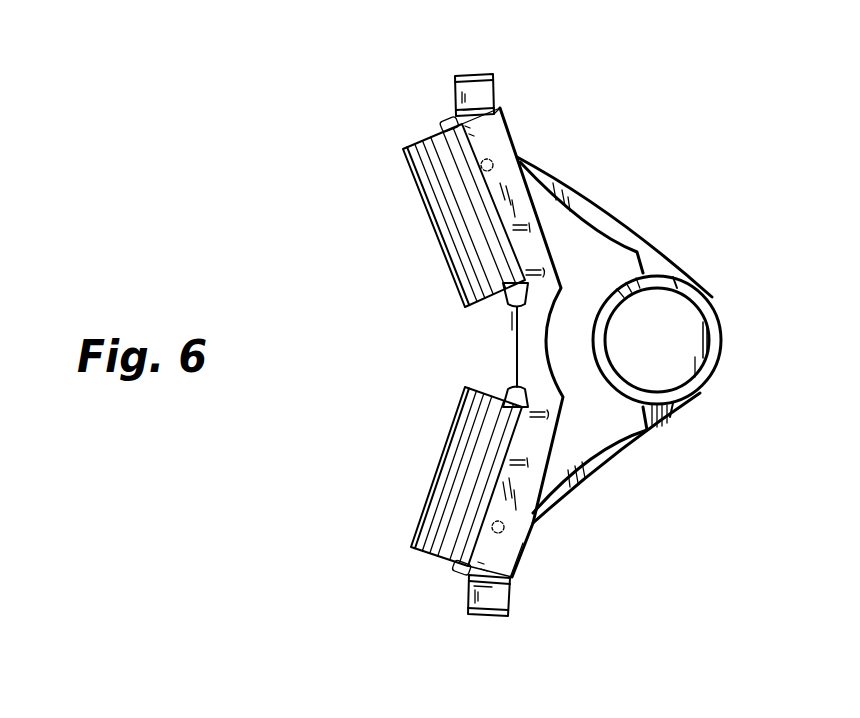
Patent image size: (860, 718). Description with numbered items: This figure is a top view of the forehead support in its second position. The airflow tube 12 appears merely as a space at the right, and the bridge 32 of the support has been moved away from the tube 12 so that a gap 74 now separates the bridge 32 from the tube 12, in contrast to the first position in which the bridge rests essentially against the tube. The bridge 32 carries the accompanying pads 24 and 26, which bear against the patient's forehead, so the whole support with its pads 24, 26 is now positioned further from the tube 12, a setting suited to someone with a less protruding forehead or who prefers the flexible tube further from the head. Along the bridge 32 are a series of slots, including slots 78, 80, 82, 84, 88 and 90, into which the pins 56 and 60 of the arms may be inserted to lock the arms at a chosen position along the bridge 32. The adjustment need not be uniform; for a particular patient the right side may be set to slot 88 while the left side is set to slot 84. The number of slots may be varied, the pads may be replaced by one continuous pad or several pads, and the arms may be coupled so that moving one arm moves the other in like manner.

The tube 12 is at (719, 354).
The pad 24 is at (440, 222).
The pad 26 is at (452, 463).
The bridge 32 is at (518, 353).
The pin 56 is at (493, 163).
The pin 60 is at (505, 530).
The gap 74 is at (570, 325).
The slot 78 is at (520, 227).
The slot 80 is at (537, 272).
The slot 82 is at (548, 414).
The slot 84 is at (528, 463).
The slot 88 is at (473, 130).
The slot 90 is at (485, 562).